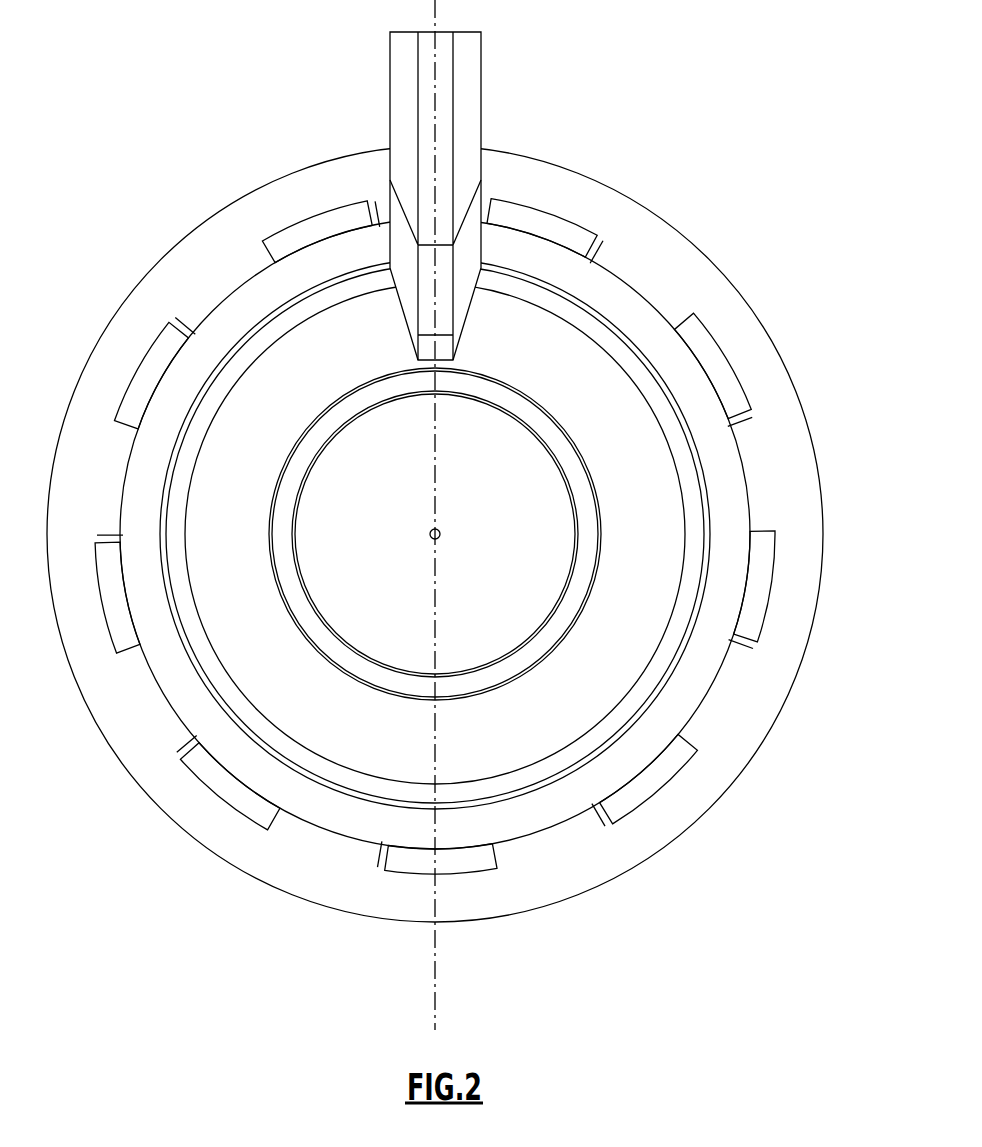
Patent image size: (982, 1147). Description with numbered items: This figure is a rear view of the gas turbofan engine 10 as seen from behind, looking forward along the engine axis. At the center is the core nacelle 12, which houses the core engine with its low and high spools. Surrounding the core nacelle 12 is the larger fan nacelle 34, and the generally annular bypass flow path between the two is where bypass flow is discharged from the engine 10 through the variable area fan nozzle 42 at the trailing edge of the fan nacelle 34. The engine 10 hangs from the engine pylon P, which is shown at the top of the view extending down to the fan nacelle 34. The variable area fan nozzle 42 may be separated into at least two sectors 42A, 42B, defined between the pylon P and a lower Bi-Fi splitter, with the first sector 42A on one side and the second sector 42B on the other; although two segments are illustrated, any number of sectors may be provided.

The gas turbofan engine 10 is at (452, 515).
The core nacelle 12 is at (318, 704).
The fan nacelle 34 is at (688, 274).
The variable area fan nozzle 42 is at (462, 536).
The first sector of the variable area fan nozzle 42A is at (104, 228).
The second sector of the variable area fan nozzle 42B is at (821, 231).
The engine pylon P is at (460, 88).